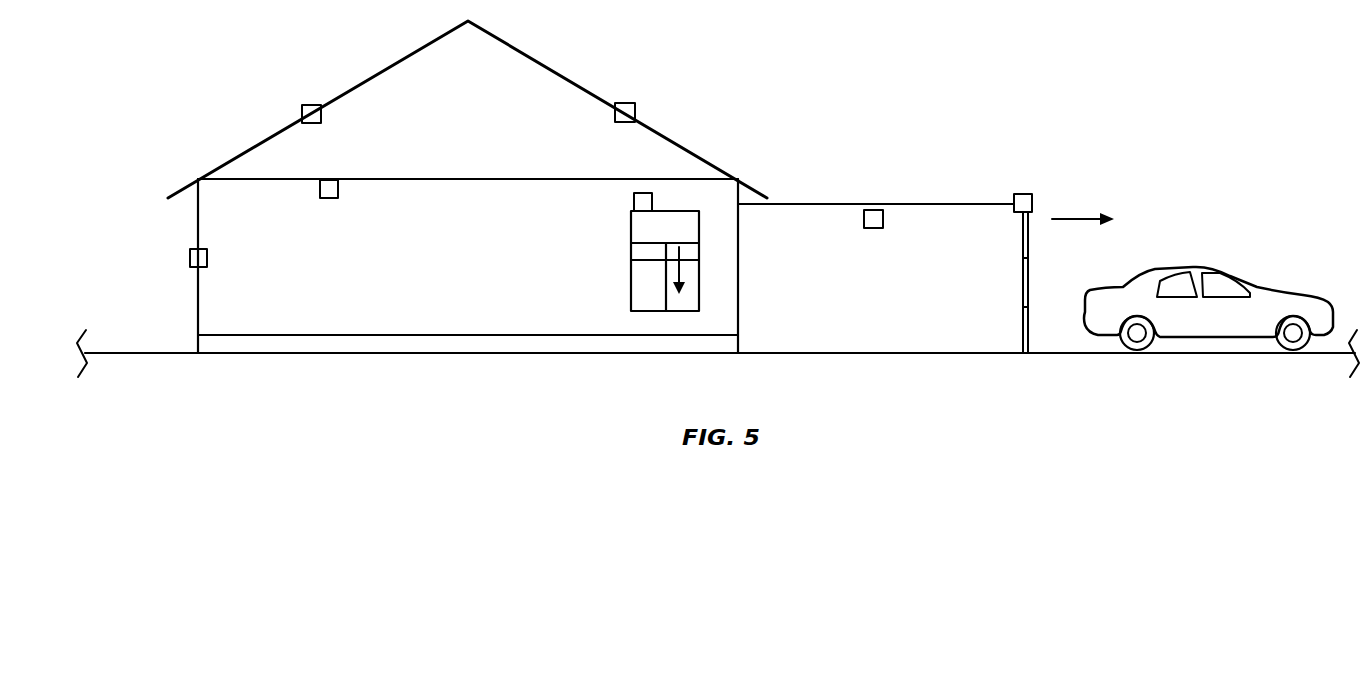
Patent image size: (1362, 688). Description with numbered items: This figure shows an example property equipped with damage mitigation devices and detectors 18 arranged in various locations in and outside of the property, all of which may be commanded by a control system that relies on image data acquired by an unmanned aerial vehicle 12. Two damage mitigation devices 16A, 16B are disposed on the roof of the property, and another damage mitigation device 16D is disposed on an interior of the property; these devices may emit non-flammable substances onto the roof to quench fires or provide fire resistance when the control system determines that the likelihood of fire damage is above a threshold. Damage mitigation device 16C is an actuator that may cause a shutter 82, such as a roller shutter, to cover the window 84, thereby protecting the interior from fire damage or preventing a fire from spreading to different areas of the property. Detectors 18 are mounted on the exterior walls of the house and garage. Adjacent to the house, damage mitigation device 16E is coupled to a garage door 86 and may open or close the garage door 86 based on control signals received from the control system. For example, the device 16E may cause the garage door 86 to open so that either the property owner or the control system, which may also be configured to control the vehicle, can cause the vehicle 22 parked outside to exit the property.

The unmanned aerial vehicle 12 is at (555, 68).
The damage mitigation device 16A is at (308, 105).
The damage mitigation device 16B is at (627, 103).
The damage mitigation device 16C is at (642, 193).
The damage mitigation device 16D is at (329, 198).
The damage mitigation device 16E is at (1023, 194).
The detectors 18 is at (190, 256).
The vehicle 22 is at (1193, 267).
The shutter 82 is at (631, 222).
The window 84 is at (631, 282).
The garage door 86 is at (1030, 276).